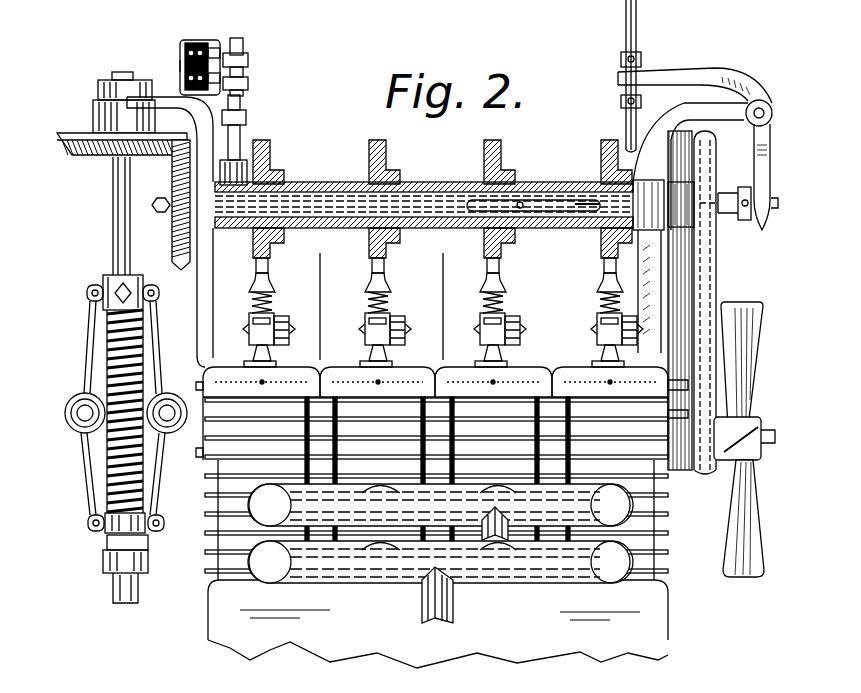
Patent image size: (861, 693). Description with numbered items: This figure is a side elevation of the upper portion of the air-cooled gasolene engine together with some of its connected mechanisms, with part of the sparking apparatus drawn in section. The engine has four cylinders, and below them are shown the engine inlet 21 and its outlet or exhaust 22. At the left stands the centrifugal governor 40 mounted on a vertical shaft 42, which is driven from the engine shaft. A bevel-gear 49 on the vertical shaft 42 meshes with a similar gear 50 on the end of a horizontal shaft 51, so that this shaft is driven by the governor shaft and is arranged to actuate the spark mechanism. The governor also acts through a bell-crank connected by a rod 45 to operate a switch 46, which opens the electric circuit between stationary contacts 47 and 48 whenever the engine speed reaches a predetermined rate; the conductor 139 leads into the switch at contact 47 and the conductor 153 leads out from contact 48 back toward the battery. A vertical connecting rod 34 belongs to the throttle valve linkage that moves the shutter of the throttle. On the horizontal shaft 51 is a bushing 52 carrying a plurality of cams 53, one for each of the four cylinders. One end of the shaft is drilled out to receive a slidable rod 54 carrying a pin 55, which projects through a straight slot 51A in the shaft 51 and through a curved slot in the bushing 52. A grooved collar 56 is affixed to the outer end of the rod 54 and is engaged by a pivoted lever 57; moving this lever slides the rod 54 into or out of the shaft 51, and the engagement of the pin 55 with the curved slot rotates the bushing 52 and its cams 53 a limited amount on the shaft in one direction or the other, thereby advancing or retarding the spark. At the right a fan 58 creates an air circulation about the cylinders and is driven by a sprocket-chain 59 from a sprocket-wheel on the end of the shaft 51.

The conductor 139 is at (182, 53).
The conductor 153 is at (183, 77).
The stationary contact 47 is at (197, 43).
The stationary contact 48 is at (181, 67).
The switch 46 is at (250, 55).
The rod 45 is at (243, 130).
The bevel-gear 49 is at (88, 157).
The vertical shaft 42 is at (117, 240).
The bevel gear 50 is at (176, 264).
The centrifugal governor 40 is at (90, 358).
The cams 53 is at (270, 160).
The horizontal shaft 51 is at (307, 203).
The bushing 52 is at (427, 190).
The straight slot 51A is at (522, 200).
The pin 55 is at (572, 214).
The vertical connecting rod 34 is at (626, 32).
The pivoted lever 57 is at (738, 73).
The slidable rod 54 is at (731, 200).
The grooved collar 56 is at (765, 230).
The sprocket-chain 59 is at (708, 302).
The fan 58 is at (738, 523).
The engine inlet 21 is at (423, 603).
The outlet or exhaust 22 is at (508, 540).